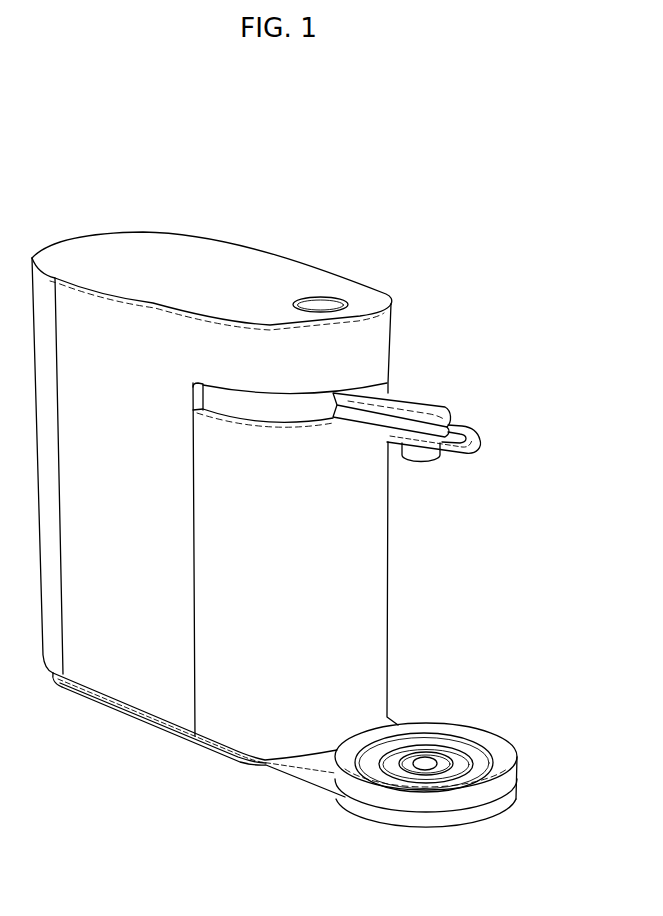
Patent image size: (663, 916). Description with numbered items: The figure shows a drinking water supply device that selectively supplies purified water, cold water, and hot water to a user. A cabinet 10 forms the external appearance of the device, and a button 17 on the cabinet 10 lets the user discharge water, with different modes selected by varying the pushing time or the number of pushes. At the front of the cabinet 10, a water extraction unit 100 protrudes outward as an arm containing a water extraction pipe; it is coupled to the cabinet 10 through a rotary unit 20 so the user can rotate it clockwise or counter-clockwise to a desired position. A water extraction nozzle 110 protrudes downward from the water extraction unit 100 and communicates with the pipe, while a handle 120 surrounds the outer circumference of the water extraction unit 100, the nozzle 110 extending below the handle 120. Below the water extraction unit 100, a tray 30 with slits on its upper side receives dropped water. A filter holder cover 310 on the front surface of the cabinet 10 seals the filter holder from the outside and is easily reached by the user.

The cabinet 10 is at (125, 694).
The button 17 is at (329, 300).
The rotary unit 20 is at (270, 403).
The tray 30 is at (442, 812).
The water extraction unit 100 is at (437, 402).
The water extraction nozzle 110 is at (425, 458).
The handle 120 is at (480, 440).
The filter holder cover 310 is at (383, 598).